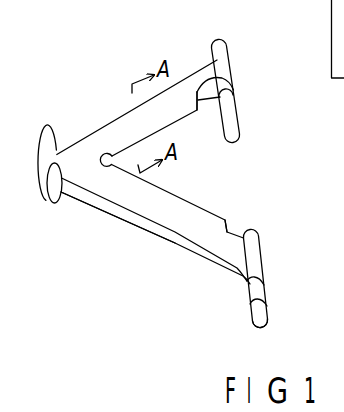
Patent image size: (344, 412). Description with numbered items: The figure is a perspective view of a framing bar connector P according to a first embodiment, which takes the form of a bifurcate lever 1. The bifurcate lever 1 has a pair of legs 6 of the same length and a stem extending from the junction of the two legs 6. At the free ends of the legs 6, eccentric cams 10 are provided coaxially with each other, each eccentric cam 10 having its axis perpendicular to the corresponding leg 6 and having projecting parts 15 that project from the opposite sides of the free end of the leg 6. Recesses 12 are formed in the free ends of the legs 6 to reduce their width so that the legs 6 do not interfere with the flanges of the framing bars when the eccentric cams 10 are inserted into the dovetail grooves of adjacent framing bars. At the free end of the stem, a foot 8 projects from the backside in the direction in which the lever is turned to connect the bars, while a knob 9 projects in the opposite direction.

The bifurcate lever 1 is at (117, 215).
The framing bar connector P is at (92, 132).
The legs 6 is at (117, 118).
The foot 8 is at (49, 204).
The knob 9 is at (46, 126).
The eccentric cams 10 is at (240, 105).
The recesses 12 is at (210, 105).
The projecting parts 15 is at (263, 319).